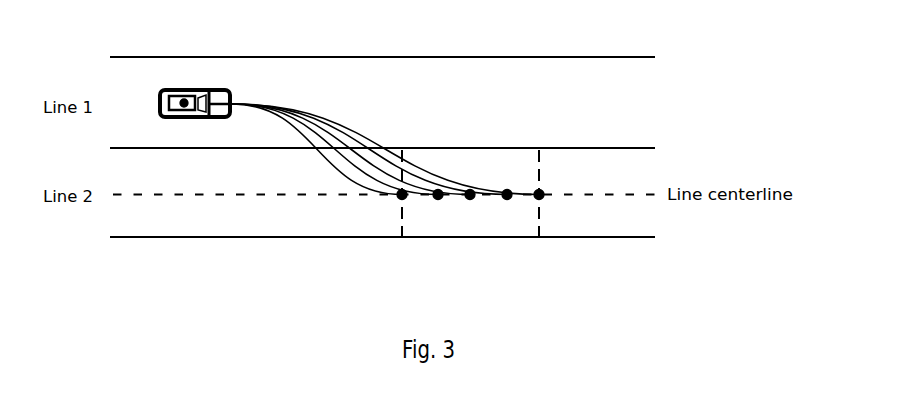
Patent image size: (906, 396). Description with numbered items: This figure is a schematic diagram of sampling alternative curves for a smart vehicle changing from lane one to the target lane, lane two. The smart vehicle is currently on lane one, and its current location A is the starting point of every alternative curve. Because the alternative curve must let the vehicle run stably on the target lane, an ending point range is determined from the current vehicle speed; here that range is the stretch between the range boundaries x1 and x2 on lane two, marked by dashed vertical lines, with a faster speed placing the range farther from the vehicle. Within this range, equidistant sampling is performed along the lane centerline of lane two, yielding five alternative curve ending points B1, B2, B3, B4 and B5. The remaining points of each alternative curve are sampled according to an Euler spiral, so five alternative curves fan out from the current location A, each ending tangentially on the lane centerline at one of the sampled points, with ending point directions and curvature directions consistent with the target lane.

The current location of the smart vehicle A is at (195, 93).
The alternative curve ending point B1 is at (402, 205).
The alternative curve ending point B2 is at (440, 205).
The alternative curve ending point B3 is at (473, 205).
The alternative curve ending point B4 is at (507, 205).
The alternative curve ending point B5 is at (540, 205).
The ending point range boundary x1 is at (401, 208).
The ending point range boundary x2 is at (539, 210).